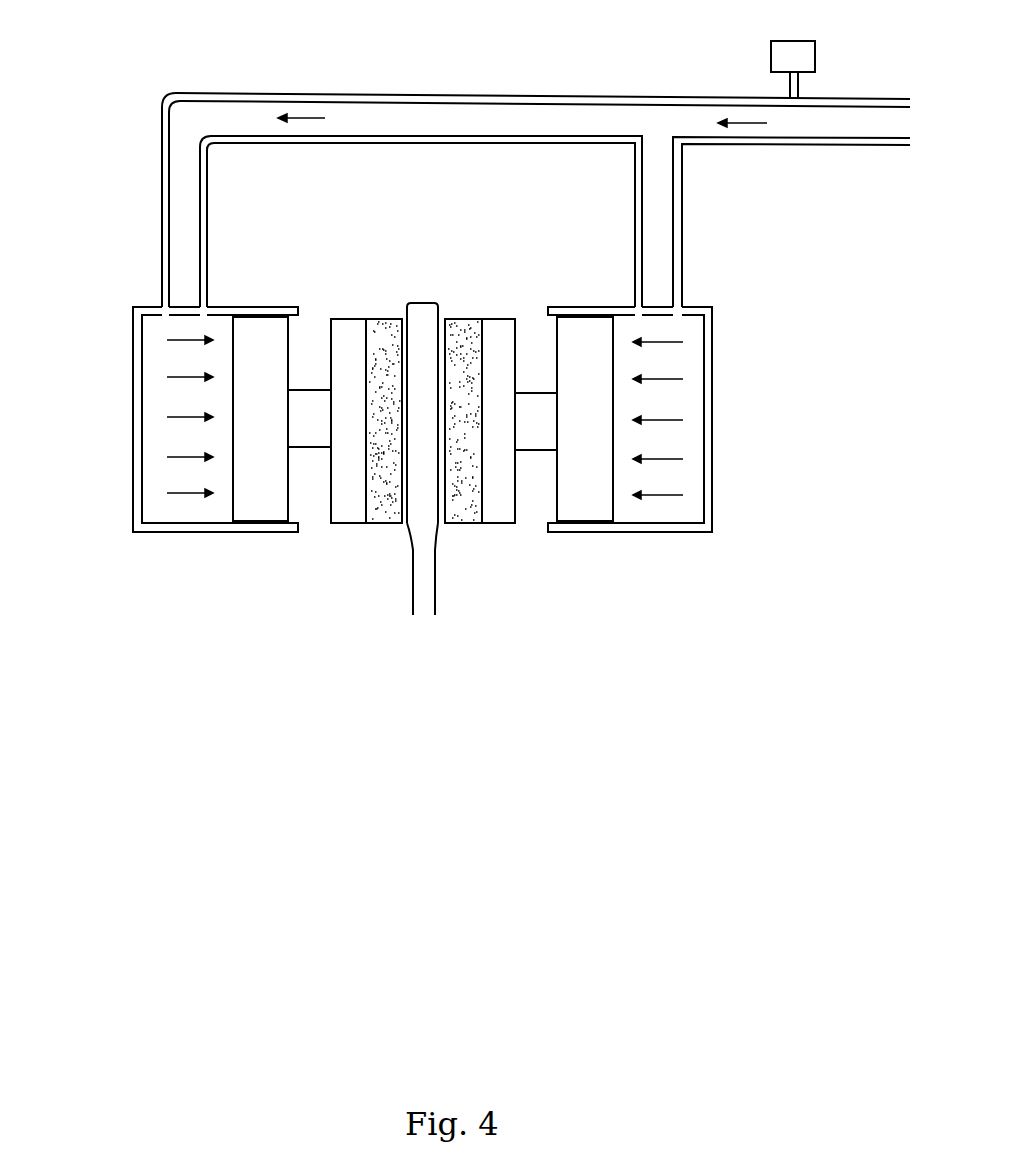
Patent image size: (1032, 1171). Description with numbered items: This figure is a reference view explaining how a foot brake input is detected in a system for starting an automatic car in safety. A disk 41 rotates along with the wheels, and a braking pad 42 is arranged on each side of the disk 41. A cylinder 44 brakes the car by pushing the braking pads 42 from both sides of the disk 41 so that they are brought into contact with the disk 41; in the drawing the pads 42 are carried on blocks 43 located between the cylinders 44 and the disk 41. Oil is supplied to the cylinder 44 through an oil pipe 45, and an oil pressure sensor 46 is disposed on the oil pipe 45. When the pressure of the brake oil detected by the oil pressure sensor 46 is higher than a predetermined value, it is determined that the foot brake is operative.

The disk 41 is at (436, 585).
The braking pad 42 is at (465, 318).
The pressing block 43 is at (493, 318).
The cylinder 44 is at (133, 417).
The oil pipe 45 is at (528, 96).
The oil pressure sensor 46 is at (771, 57).